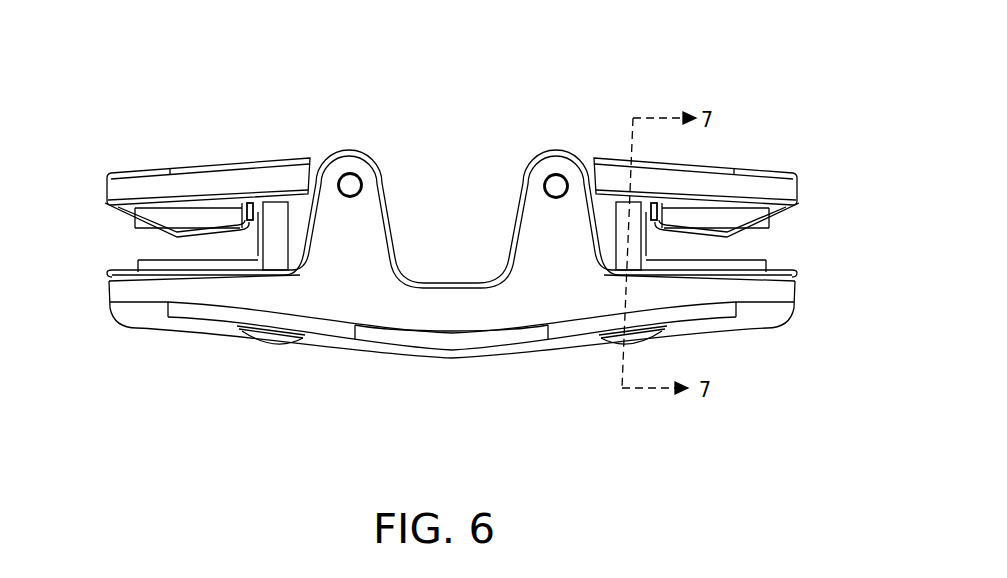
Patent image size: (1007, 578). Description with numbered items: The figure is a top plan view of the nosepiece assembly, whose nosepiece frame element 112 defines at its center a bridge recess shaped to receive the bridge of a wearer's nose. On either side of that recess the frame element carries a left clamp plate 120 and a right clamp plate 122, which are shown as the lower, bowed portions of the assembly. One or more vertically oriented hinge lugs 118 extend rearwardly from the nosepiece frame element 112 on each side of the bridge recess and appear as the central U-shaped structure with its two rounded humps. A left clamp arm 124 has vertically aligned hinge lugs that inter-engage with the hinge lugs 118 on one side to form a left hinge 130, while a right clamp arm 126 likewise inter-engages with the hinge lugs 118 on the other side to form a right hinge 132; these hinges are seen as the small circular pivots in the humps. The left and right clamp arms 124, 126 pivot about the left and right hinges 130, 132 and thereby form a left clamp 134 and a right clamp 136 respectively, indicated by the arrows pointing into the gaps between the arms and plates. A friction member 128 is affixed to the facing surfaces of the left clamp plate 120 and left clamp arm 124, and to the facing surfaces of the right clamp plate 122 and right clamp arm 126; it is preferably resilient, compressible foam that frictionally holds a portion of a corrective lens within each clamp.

The nosepiece frame element 112 is at (413, 358).
The hinge lugs 118 is at (380, 176).
The left clamp plate 120 is at (797, 293).
The right clamp plate 122 is at (107, 293).
The left clamp arm 124 is at (747, 169).
The right clamp arm 126 is at (195, 166).
The friction member 128 is at (165, 237).
The left hinge 130 is at (555, 174).
The right hinge 132 is at (349, 173).
The left clamp 134 is at (768, 245).
The right clamp 136 is at (137, 246).